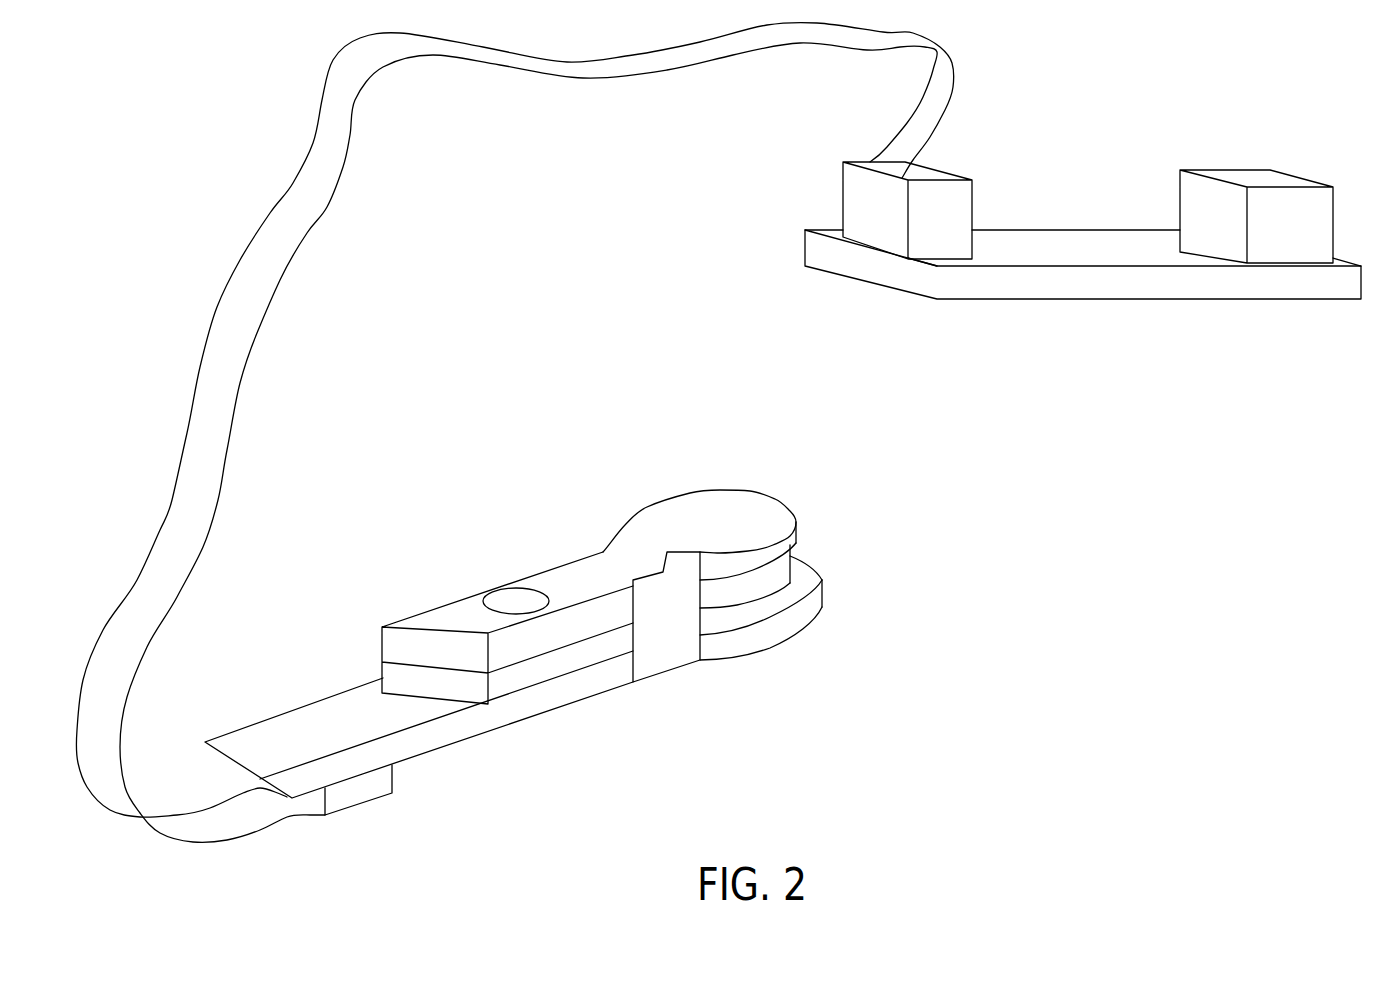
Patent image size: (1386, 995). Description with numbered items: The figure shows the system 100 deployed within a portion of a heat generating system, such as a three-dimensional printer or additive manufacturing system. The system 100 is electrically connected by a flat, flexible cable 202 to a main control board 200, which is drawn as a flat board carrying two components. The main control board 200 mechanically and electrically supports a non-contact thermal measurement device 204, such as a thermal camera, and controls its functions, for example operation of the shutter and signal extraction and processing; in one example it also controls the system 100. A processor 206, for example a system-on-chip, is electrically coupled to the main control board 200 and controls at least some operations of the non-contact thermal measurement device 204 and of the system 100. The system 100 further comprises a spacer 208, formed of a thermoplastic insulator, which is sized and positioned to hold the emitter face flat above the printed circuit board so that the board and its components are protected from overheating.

The system 100 is at (720, 505).
The main control board 200 is at (1075, 233).
The flat, flexible cable 202 is at (272, 215).
The non-contact thermal measurement device 204 is at (1247, 177).
The processor 206 is at (843, 175).
The spacer 208 is at (685, 632).